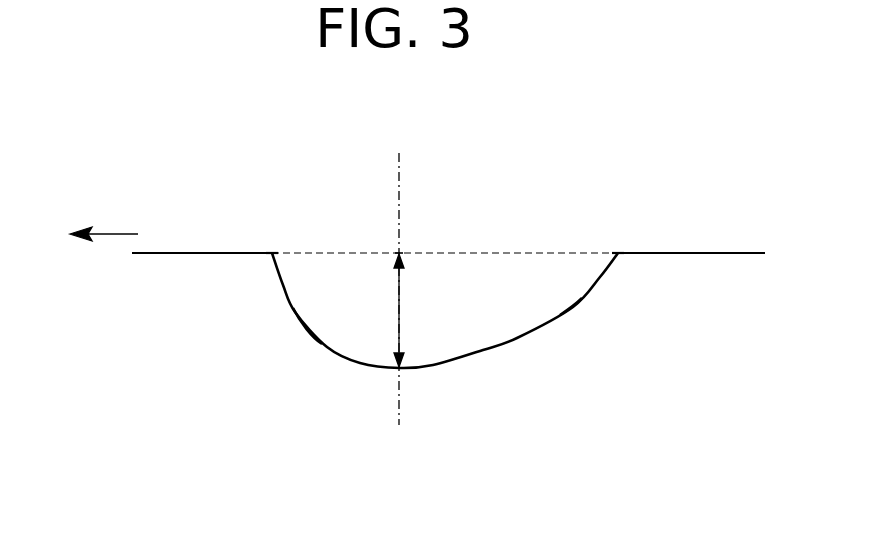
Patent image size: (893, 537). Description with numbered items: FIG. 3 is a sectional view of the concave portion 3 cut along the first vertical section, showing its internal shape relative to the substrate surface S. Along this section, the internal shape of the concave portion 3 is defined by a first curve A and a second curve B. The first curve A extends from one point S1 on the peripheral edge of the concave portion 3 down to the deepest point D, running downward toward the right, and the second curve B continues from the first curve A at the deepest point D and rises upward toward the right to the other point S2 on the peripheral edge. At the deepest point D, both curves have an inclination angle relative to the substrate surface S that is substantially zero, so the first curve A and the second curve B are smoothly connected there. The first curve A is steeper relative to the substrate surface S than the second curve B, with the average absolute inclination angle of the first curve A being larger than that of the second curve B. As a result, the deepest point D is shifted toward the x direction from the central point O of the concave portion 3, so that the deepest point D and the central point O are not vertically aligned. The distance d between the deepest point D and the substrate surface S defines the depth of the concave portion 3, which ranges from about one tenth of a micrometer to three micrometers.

The concave portion 3 is at (510, 340).
The substrate surface S is at (703, 253).
The one point on the peripheral edge S1 is at (272, 253).
The other point on the peripheral edge S2 is at (618, 253).
The first curve A is at (293, 313).
The second curve B is at (573, 307).
The central point of the concave portion O is at (399, 253).
The deepest point D is at (399, 368).
The groove depth d is at (408, 310).
The x direction x is at (93, 234).